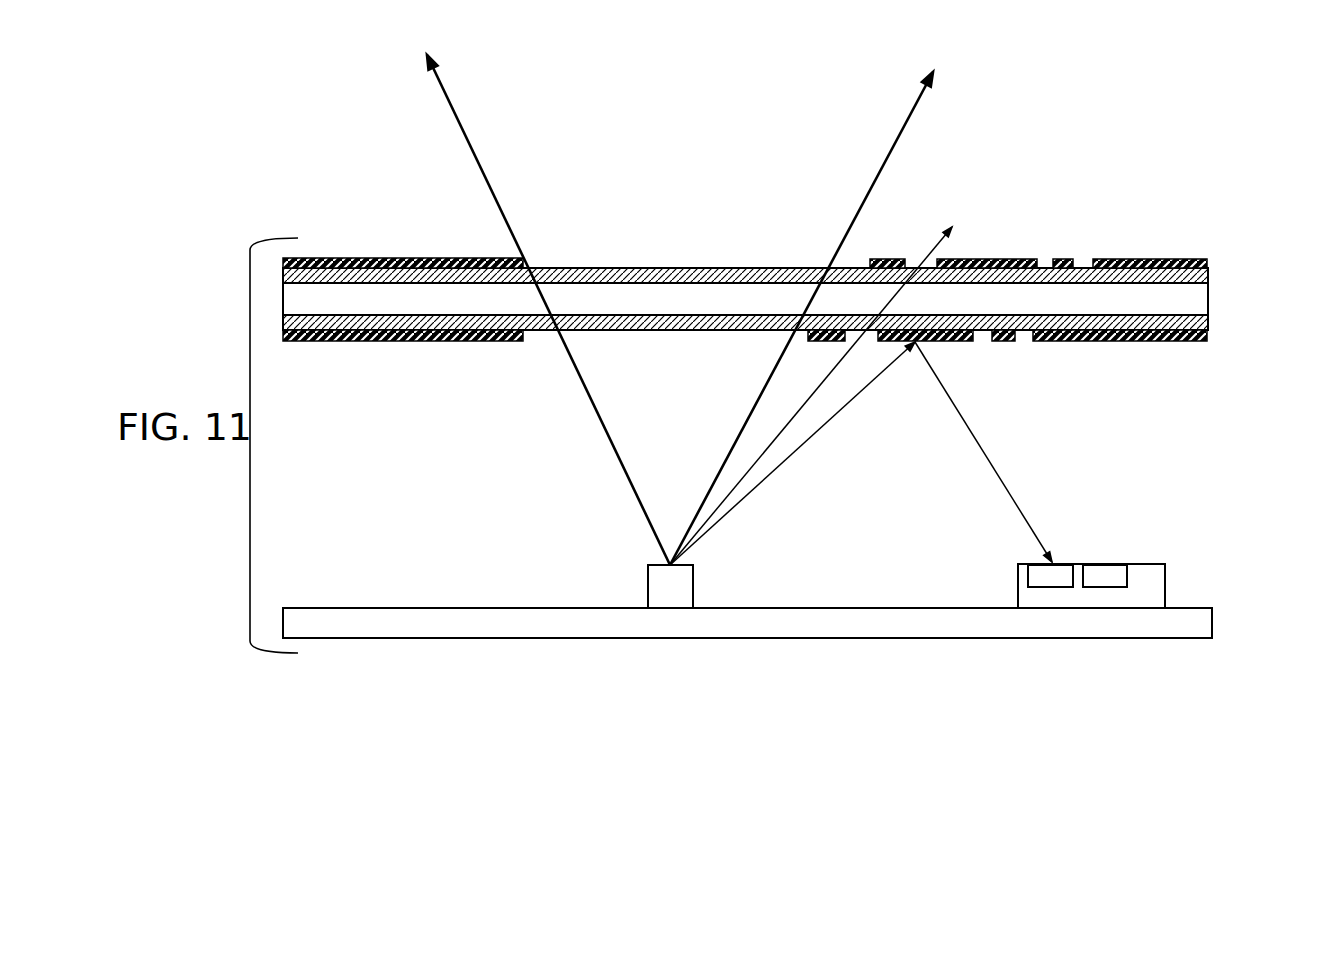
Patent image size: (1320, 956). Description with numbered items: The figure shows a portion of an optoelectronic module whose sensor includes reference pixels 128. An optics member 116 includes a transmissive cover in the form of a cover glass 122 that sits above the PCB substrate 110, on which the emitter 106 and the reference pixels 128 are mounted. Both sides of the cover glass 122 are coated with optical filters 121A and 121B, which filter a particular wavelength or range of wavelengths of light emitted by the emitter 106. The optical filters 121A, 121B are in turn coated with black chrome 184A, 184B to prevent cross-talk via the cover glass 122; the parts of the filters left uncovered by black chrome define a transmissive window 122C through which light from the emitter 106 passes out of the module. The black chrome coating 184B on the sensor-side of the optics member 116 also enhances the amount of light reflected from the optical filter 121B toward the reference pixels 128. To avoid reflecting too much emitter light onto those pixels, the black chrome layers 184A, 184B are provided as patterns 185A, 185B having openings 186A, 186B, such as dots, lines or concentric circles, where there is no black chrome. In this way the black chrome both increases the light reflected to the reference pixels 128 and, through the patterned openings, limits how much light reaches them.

The emitter 106 is at (660, 588).
The PCB substrate 110 is at (1213, 616).
The optics member 116 is at (801, 301).
The optical filter 121A is at (607, 259).
The optical filter 121B is at (536, 342).
The transmissive cover 122 is at (1193, 297).
The transmissive window 122C is at (655, 297).
The reference pixels 128 is at (1045, 582).
The black chrome 184A is at (1175, 260).
The black chrome 184B is at (1150, 341).
The pattern 185A is at (892, 253).
The pattern 185B is at (830, 343).
The openings 186A is at (913, 262).
The openings 186B is at (867, 341).